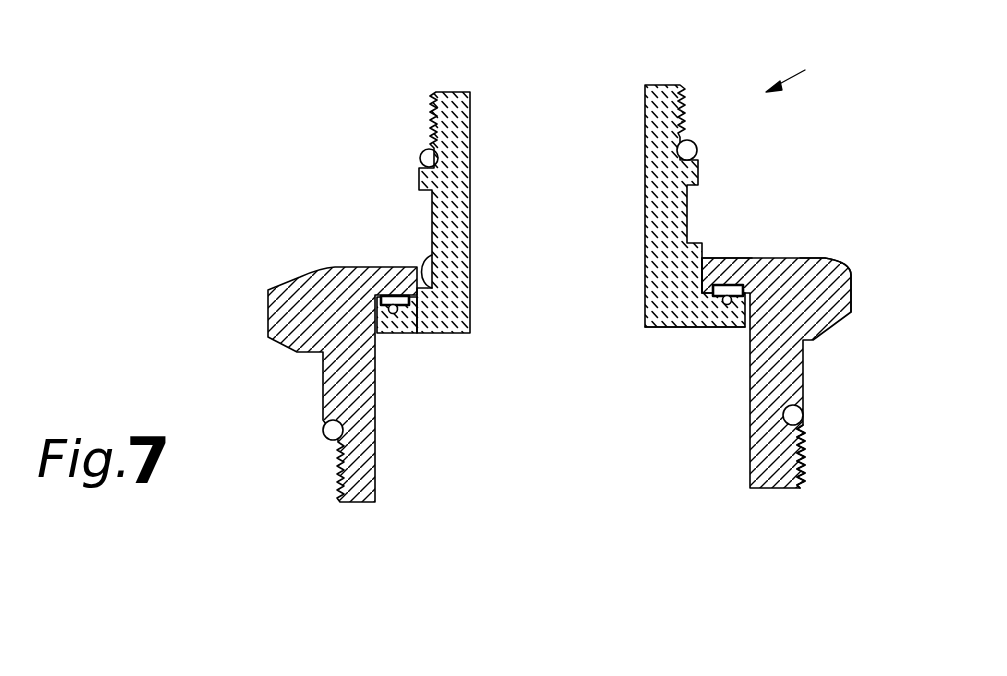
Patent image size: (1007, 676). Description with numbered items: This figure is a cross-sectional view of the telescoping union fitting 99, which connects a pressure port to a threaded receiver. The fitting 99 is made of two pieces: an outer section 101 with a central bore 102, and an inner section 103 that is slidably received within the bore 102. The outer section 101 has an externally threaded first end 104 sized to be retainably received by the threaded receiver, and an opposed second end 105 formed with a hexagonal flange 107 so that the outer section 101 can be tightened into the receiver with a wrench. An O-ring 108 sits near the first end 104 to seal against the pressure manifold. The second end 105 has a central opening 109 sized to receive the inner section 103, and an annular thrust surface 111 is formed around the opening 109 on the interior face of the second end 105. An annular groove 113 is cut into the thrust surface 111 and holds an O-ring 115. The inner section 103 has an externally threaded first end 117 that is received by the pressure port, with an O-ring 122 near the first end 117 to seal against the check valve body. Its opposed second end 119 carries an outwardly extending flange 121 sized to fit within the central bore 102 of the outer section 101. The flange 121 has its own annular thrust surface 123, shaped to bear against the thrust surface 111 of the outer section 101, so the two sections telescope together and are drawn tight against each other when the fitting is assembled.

The telescoping union fitting 99 is at (802, 75).
The outer section 101 is at (808, 367).
The central bore 102 is at (377, 487).
The inner section 103 is at (698, 163).
The first end 104 is at (790, 448).
The second end 105 is at (735, 261).
The hexagonal flange 107 is at (853, 280).
The O-ring 108 is at (803, 415).
The central opening 109 is at (427, 266).
The annular thrust surface 111 is at (416, 318).
The annular groove 113 is at (748, 290).
The O-ring 115 is at (720, 302).
The first end 117 is at (680, 104).
The second end 119 is at (672, 327).
The flange 121 is at (387, 336).
The O-ring 122 is at (420, 157).
The annular thrust surface 123 is at (385, 300).